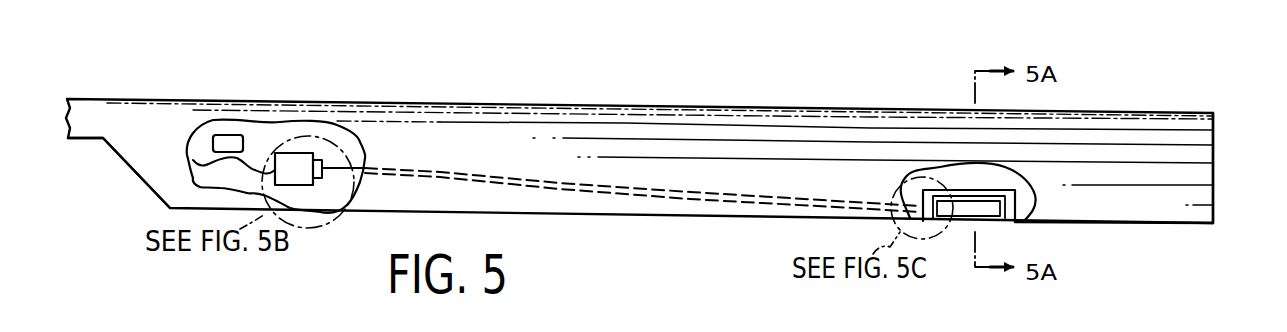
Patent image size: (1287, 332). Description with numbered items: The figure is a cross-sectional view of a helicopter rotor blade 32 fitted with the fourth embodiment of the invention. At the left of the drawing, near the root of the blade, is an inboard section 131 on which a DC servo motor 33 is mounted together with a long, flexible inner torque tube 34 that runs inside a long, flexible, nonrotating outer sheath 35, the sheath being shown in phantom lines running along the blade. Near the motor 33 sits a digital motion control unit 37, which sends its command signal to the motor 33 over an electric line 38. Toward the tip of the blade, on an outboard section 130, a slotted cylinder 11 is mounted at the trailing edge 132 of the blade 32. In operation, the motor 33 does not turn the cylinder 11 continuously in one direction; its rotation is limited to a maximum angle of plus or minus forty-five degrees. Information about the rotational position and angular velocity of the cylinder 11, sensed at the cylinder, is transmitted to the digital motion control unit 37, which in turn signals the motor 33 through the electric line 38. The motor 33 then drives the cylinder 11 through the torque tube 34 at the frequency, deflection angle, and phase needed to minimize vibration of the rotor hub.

The slotted cylinder 11 is at (1008, 222).
The rotor blade 32 is at (570, 103).
The DC servo motor 33 is at (300, 153).
The inner torque tube 34 is at (332, 174).
The outer sheath 35 is at (552, 187).
The digital motion control unit 37 is at (218, 135).
The electric line 38 is at (194, 162).
The outboard section 130 is at (1215, 148).
The inboard section 131 is at (128, 172).
The trailing edge 132 is at (1123, 222).